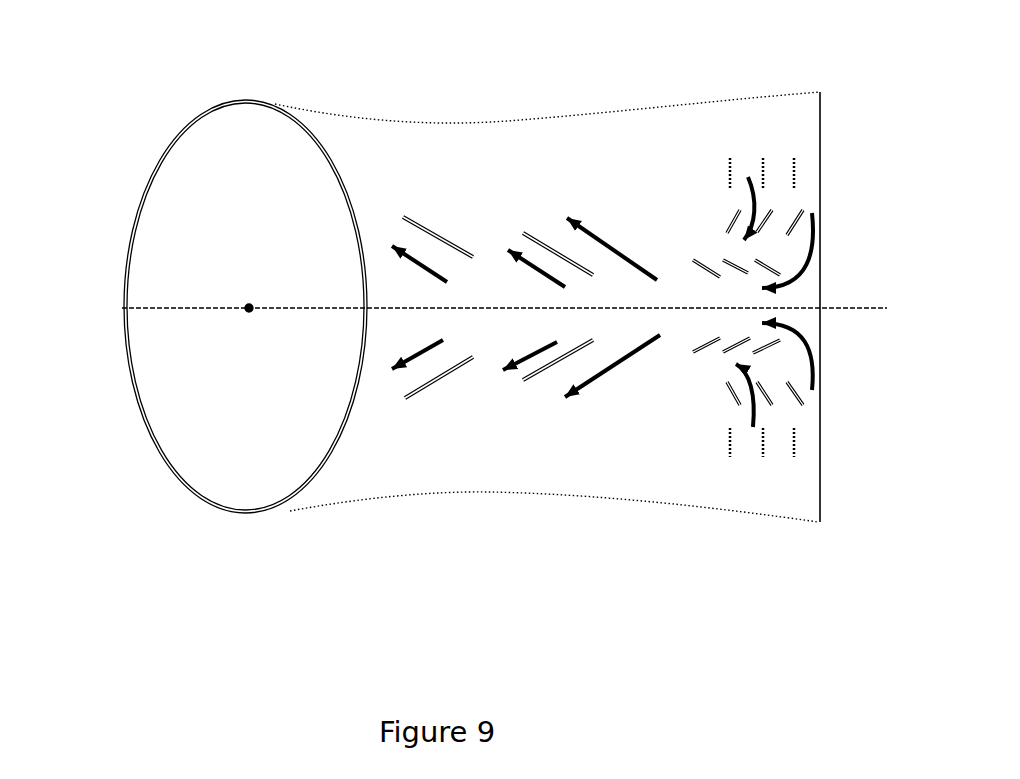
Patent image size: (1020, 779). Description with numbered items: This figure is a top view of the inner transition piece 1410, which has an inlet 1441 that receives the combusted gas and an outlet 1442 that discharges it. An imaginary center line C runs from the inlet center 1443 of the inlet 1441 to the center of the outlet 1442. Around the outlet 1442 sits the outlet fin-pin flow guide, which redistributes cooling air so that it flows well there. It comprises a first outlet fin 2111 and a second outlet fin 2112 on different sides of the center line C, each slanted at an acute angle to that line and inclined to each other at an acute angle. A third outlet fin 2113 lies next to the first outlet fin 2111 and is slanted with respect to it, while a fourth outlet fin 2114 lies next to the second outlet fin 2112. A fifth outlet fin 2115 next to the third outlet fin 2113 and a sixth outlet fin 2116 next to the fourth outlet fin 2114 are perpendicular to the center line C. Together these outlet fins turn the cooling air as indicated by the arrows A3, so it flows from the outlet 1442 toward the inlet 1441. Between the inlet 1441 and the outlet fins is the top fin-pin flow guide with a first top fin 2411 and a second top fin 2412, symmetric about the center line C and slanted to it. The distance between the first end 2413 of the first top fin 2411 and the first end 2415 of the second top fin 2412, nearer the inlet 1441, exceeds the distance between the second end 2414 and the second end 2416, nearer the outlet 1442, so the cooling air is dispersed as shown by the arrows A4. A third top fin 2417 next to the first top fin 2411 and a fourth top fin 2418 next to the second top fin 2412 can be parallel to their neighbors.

The inner transition piece 1410 is at (15, 101).
The inlet 1441 is at (180, 191).
The outlet 1442 is at (846, 382).
The inlet center 1443 is at (242, 313).
The first outlet fin 2111 is at (694, 357).
The second outlet fin 2112 is at (694, 255).
The third outlet fin 2113 is at (728, 394).
The fourth outlet fin 2114 is at (727, 220).
The fifth outlet fin 2115 is at (738, 450).
The sixth outlet fin 2116 is at (739, 160).
The first top fin 2411 is at (445, 389).
The second top fin 2412 is at (441, 220).
The first end of the first top fin 2413 is at (405, 409).
The second end of the first top fin 2414 is at (478, 369).
The first end of the second top fin 2415 is at (409, 206).
The second end of the second top fin 2416 is at (479, 245).
The third top fin 2417 is at (543, 379).
The fourth top fin 2418 is at (542, 228).
The arrow indicating cooling air flow direction A3 is at (758, 302).
The arrows indicating dispersed cooling air flow A4 is at (526, 307).